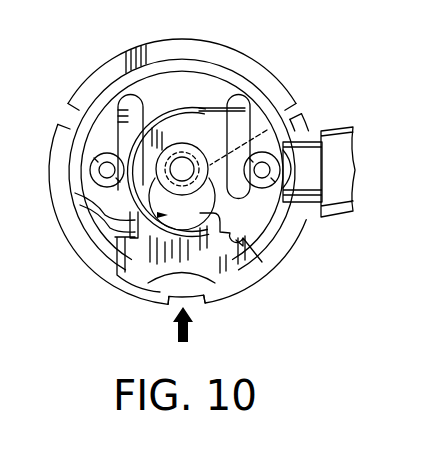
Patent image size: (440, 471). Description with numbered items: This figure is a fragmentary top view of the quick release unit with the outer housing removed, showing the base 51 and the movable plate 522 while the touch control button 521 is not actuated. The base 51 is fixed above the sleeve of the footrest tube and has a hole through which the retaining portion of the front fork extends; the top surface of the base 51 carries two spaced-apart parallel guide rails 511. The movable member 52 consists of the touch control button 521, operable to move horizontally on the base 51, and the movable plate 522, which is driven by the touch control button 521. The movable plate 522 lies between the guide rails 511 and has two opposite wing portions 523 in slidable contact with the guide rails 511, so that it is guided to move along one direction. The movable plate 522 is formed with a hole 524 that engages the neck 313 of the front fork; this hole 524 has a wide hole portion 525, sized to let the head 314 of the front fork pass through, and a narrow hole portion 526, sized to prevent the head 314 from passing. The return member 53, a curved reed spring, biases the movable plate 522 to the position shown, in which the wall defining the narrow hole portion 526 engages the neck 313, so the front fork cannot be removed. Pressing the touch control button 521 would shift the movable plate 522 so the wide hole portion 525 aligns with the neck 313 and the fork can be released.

The base 51 is at (180, 171).
The guide rails 511 is at (263, 90).
The movable member 52 is at (186, 187).
The touch control button 521 is at (233, 294).
The movable plate 522 is at (128, 72).
The wing portions 523 is at (130, 219).
The hole 524 is at (137, 220).
The wide hole portion 525 is at (253, 268).
The narrow hole portion 526 is at (177, 145).
The return member 53 is at (197, 152).
The neck 313 is at (298, 113).
The head 314 is at (219, 106).